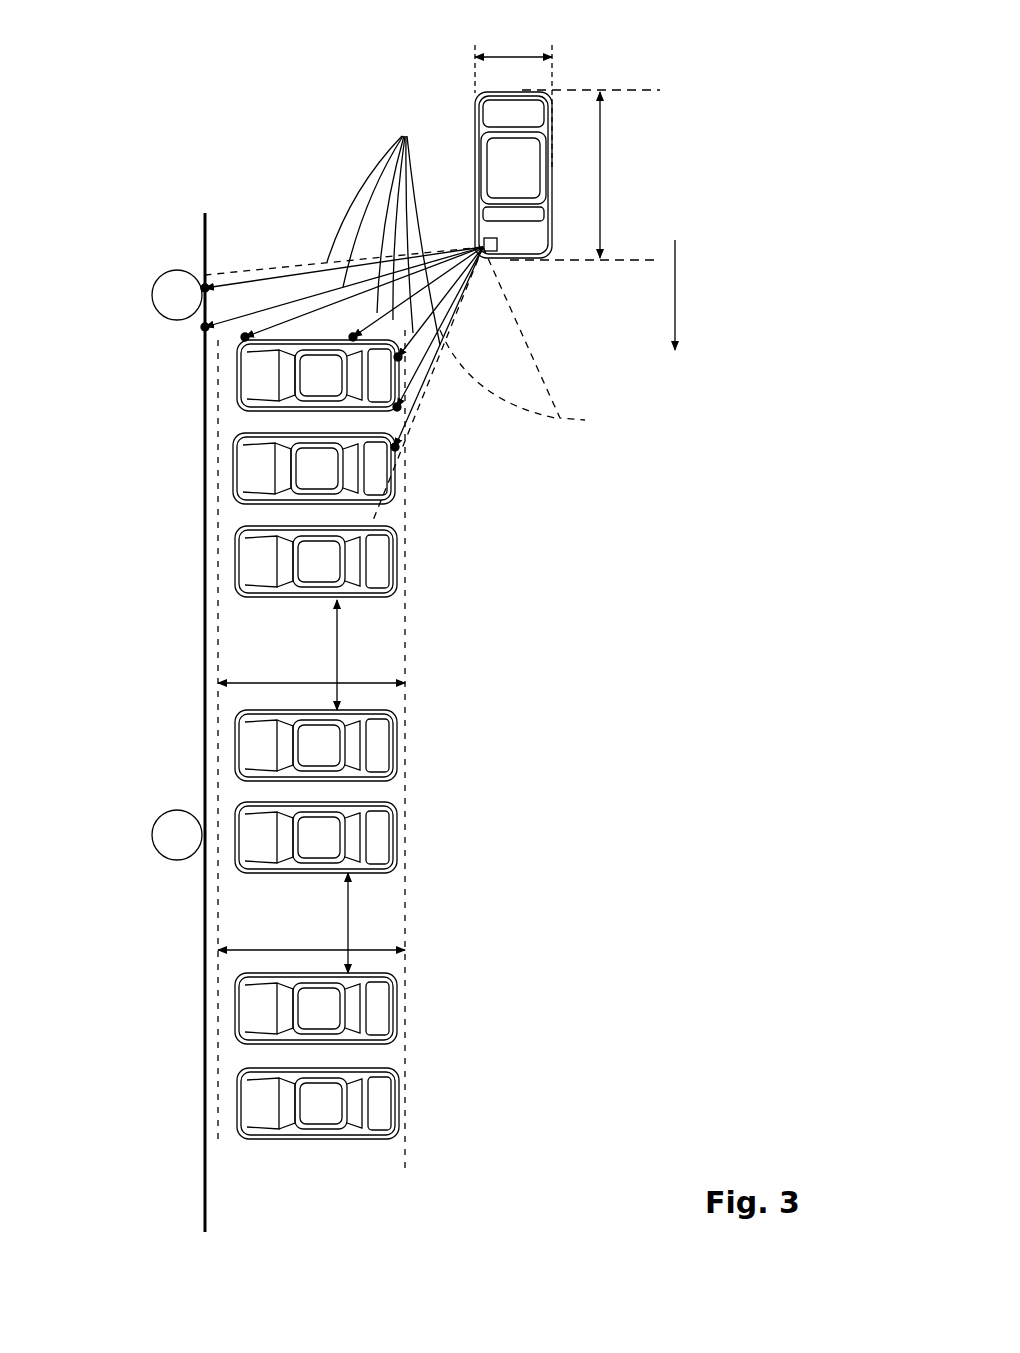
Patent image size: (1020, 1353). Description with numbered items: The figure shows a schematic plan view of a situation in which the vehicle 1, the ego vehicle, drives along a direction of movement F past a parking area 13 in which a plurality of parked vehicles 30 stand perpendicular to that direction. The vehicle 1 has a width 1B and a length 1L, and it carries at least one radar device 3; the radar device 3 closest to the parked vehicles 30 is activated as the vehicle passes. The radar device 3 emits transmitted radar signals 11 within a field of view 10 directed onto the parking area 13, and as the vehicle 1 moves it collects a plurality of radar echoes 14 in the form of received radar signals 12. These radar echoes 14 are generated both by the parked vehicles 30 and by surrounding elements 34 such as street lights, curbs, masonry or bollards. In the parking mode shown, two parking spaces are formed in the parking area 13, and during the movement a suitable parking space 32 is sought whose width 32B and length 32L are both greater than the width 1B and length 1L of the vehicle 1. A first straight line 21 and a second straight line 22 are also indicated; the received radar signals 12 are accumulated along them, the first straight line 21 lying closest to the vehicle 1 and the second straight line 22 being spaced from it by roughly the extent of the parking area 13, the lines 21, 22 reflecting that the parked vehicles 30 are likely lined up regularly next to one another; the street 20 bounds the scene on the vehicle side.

The vehicle 1 is at (517, 162).
The width of the vehicle 1B is at (513, 57).
The length of the vehicle 1L is at (600, 195).
The radar device 3 is at (500, 260).
The field of view 10 is at (410, 385).
The transmitted radar signals 11 is at (392, 231).
The received radar signals 12 is at (392, 231).
The parking area 13 is at (350, 1160).
The radar echoes 14 is at (245, 341).
The road 20 is at (205, 702).
The first straight line 21 is at (412, 530).
The second straight line 22 is at (205, 465).
The parked vehicles 30 is at (316, 739).
The parking space 32 is at (372, 617).
The width of the parking space 32B is at (340, 638).
The length of the parking space 32L is at (272, 680).
The surrounding elements 34 is at (150, 293).
The direction of movement F is at (677, 308).